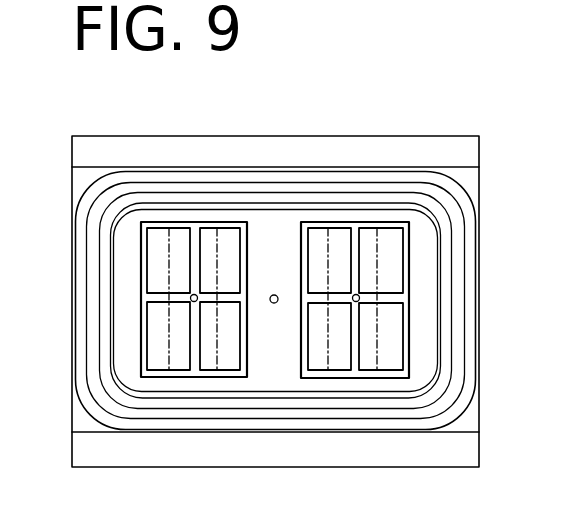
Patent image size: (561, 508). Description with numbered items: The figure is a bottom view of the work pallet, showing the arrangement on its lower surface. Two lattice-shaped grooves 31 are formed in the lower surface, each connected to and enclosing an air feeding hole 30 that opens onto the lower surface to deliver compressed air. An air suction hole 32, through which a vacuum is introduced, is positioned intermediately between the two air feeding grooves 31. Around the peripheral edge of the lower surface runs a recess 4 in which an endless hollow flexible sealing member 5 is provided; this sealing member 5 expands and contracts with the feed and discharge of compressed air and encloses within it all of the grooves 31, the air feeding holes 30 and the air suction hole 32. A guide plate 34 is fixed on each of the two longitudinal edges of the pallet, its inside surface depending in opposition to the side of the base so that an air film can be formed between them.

The recess 4 is at (435, 172).
The hollow flexible sealing member 5 is at (93, 273).
The air feeding holes 30 is at (191, 295).
The grooves 31 is at (147, 333).
The air suction hole 32 is at (274, 295).
The guide plate 34 is at (263, 147).